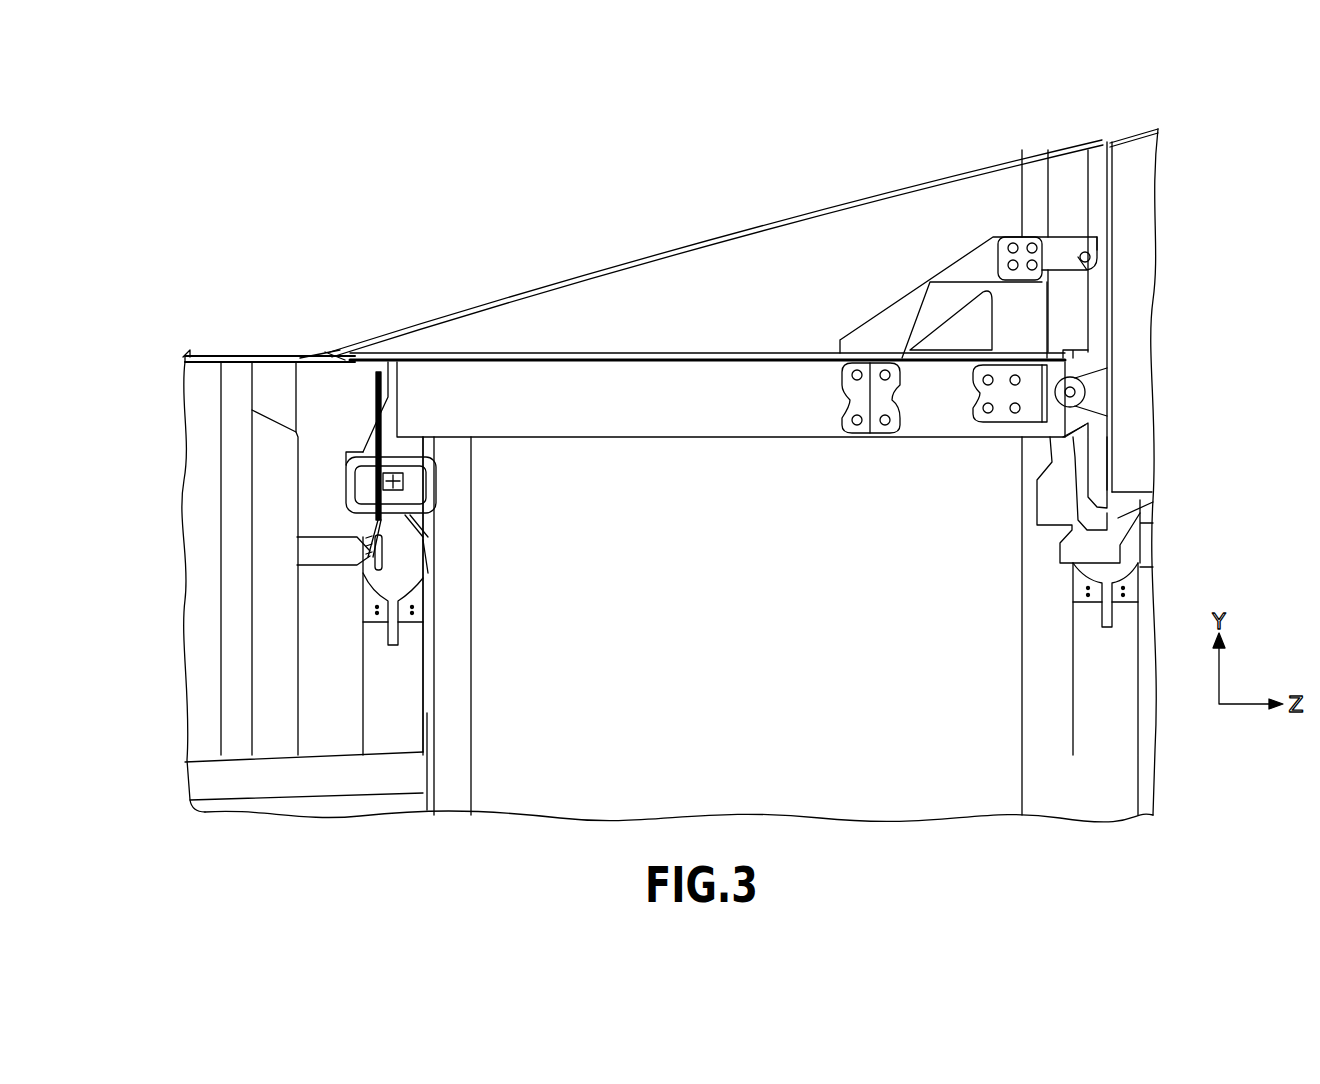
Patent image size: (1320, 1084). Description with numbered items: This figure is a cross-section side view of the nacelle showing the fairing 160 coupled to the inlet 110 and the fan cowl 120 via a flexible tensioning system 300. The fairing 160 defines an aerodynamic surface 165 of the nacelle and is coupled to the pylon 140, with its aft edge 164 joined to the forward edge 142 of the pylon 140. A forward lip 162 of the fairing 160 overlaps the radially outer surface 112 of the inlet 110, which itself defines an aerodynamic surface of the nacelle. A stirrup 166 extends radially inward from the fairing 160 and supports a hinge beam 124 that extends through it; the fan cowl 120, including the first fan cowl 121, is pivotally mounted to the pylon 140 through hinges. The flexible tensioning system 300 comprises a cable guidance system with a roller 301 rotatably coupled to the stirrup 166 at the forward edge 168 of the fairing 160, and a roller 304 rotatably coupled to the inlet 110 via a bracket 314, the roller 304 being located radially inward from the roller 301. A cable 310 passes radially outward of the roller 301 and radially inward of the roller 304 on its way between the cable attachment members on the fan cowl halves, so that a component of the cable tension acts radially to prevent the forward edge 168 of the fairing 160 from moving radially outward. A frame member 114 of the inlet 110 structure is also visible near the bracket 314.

The inlet 110 is at (203, 425).
The radially outer surface 112 is at (190, 356).
The frame web 114 is at (297, 655).
The fan cowl 120 is at (781, 545).
The first fan cowl 121 is at (682, 545).
The hinge beam 124 is at (397, 482).
The pylon 140 is at (1143, 337).
The forward edge 142 is at (1104, 150).
The fairing 160 is at (803, 243).
The forward lip 162 is at (278, 352).
The aft edge 164 is at (1113, 202).
The aerodynamic surface 165 is at (626, 265).
The stirrup 166 is at (437, 455).
The forward edge 168 is at (333, 358).
The flexible tensioning system 300 is at (352, 392).
The roller 301 is at (383, 396).
The roller 304 is at (380, 567).
The cable 310 is at (385, 448).
The bracket 314 is at (340, 567).